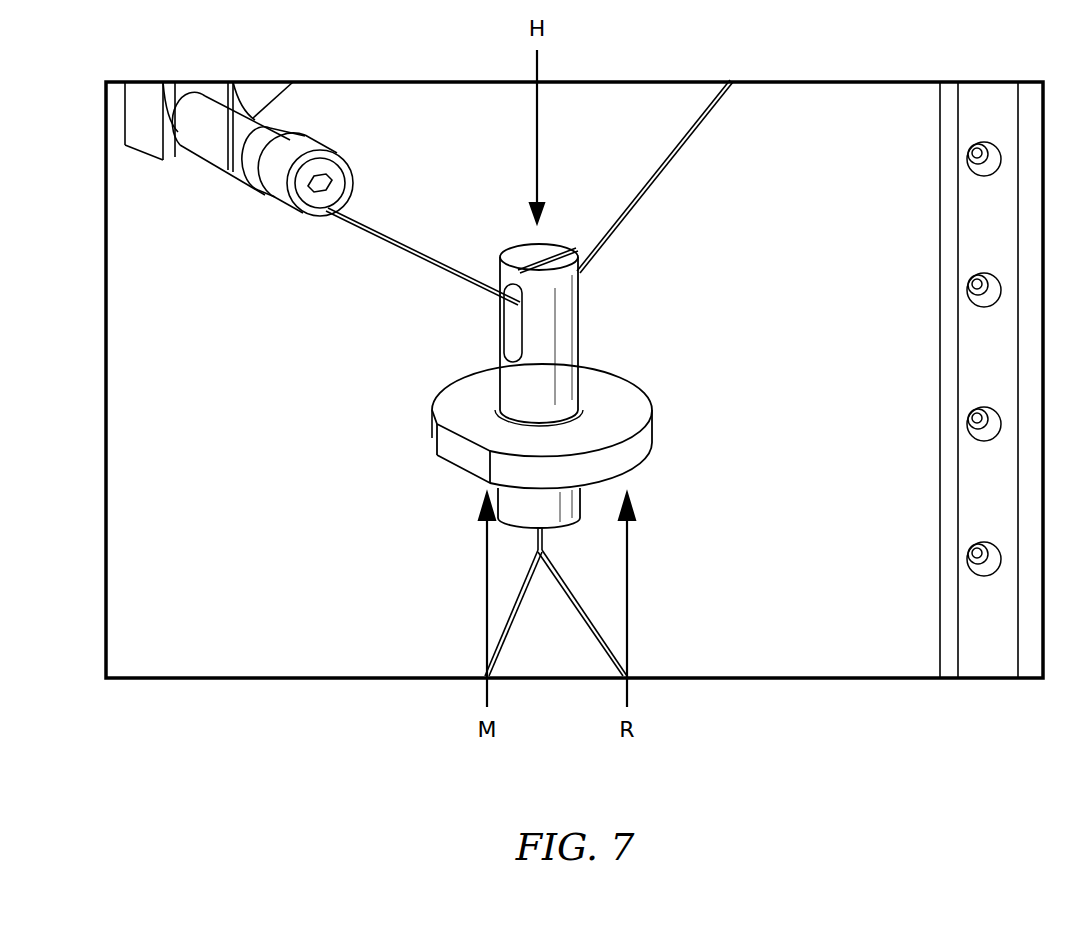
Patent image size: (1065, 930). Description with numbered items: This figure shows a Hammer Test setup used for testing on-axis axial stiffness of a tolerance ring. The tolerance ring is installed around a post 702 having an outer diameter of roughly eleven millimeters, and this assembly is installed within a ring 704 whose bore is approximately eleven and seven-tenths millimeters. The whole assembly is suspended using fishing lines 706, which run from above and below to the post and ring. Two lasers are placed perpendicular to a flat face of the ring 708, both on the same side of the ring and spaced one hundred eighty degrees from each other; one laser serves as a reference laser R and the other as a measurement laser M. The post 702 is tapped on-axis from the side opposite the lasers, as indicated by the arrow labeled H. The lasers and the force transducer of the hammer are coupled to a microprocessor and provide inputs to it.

The post 702 is at (577, 250).
The ring 704 is at (447, 447).
The fishing lines 706 is at (397, 245).
The flat face of the ring 708 is at (643, 468).